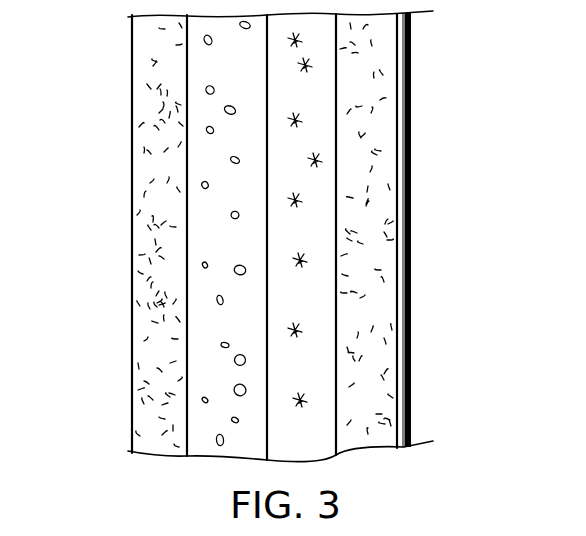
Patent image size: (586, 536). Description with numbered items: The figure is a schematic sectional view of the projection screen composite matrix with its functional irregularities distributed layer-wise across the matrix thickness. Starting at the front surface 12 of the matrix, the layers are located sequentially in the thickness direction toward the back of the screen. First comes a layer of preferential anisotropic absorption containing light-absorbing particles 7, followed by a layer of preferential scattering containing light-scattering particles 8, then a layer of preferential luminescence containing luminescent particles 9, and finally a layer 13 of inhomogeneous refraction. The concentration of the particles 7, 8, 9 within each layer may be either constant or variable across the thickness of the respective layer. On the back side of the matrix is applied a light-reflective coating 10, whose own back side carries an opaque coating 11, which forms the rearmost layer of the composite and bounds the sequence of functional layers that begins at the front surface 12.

The light-absorbing particles 7 is at (143, 97).
The light-scattering particles 8 is at (223, 158).
The luminescent particles 9 is at (310, 112).
The light-reflective coating 10 is at (400, 280).
The opaque coating 11 is at (410, 347).
The front surface 12 is at (132, 300).
The layer of inhomogeneous refraction 13 is at (377, 153).